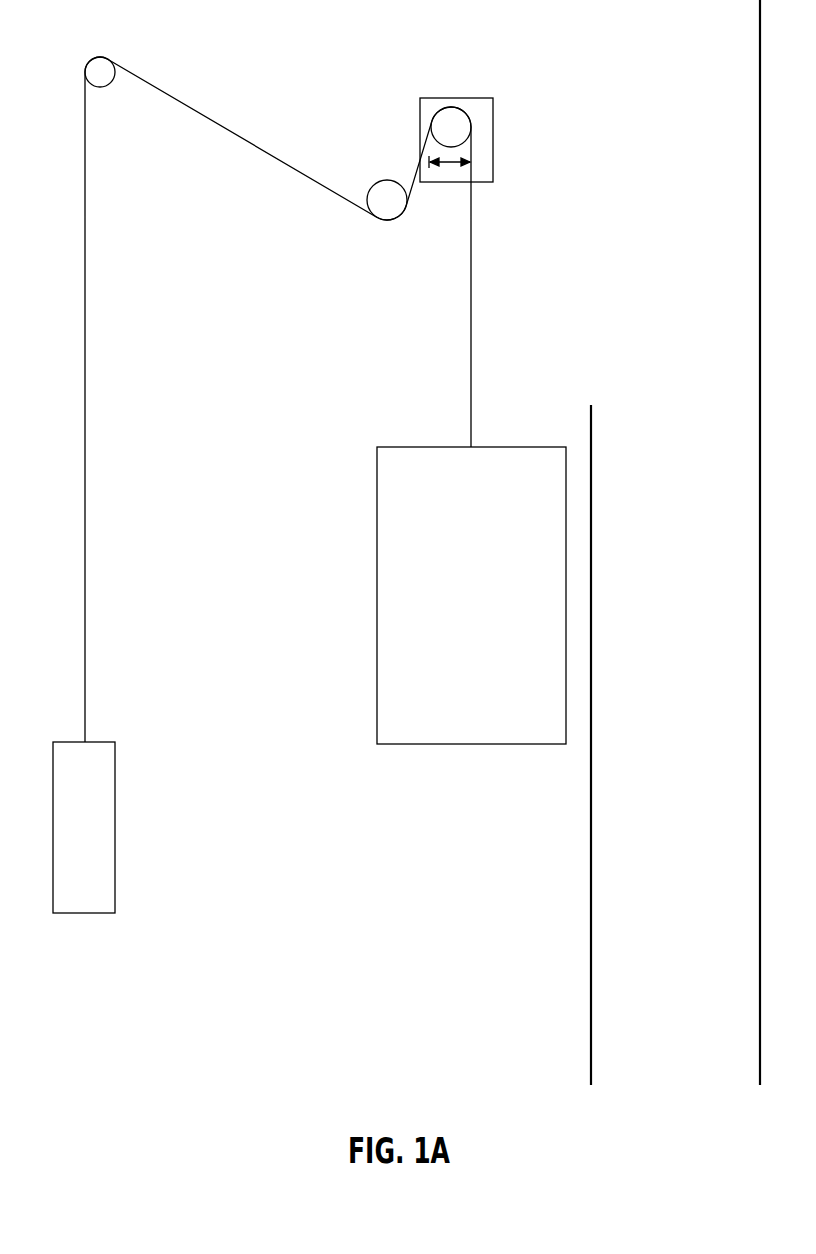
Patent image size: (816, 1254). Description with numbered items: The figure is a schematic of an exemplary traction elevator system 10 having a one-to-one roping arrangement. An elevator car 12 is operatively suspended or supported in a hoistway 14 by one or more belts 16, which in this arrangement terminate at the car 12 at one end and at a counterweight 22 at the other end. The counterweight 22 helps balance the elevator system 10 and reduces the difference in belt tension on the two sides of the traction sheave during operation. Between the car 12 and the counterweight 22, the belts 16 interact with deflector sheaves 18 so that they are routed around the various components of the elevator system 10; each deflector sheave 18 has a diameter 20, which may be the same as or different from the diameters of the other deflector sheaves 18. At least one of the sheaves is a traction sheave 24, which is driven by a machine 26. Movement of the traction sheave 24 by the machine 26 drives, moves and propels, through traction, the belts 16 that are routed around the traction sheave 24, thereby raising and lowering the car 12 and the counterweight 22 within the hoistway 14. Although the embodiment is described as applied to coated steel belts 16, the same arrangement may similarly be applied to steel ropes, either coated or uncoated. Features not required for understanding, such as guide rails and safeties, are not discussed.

The elevator system 10 is at (614, 47).
The elevator car 12 is at (488, 608).
The hoistway 14 is at (592, 638).
The belts 16 is at (267, 153).
The deflector sheaves 18 is at (95, 57).
The diameter 20 is at (452, 166).
The counterweight 22 is at (100, 840).
The traction sheave 24 is at (456, 108).
The machine 26 is at (438, 98).